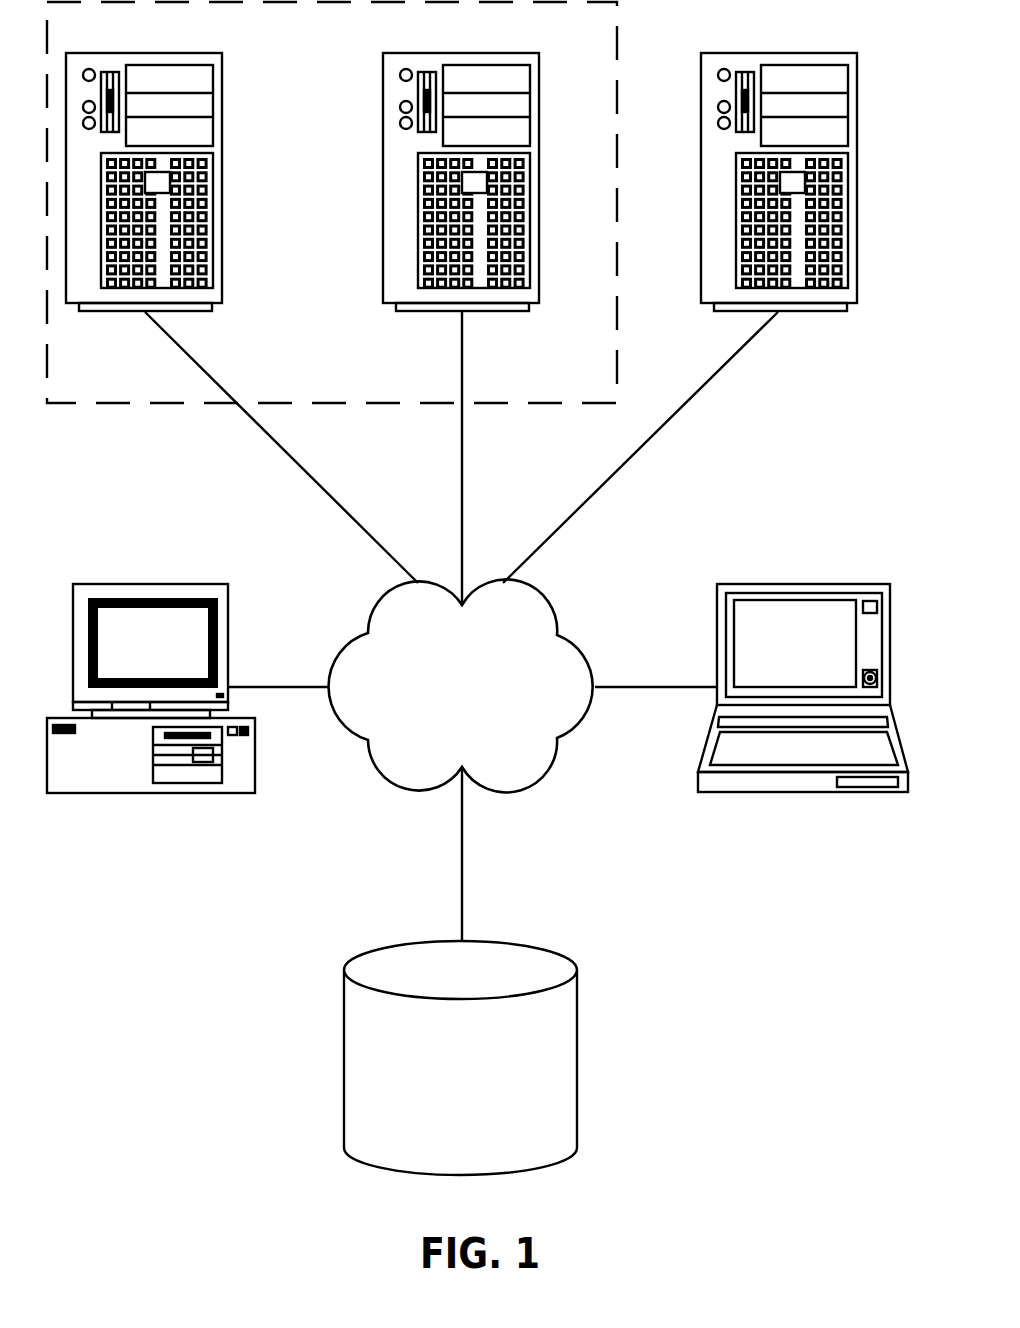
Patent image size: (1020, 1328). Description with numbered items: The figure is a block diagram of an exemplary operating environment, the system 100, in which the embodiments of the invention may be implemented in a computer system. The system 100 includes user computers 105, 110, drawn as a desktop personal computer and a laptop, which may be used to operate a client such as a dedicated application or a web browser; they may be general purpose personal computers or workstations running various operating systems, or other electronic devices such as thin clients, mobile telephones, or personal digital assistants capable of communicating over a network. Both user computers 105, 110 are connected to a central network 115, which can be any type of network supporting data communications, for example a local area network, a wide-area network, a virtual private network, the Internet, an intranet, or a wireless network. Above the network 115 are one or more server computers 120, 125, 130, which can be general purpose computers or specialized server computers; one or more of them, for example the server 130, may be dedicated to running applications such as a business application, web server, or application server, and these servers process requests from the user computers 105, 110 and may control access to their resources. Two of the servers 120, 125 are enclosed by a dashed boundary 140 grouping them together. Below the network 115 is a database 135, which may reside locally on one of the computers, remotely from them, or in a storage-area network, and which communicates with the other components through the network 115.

The system 100 is at (262, 937).
The user computer 105 is at (237, 793).
The user computer 110 is at (852, 792).
The network 115 is at (542, 767).
The server computer 120 is at (198, 312).
The server computer 125 is at (515, 312).
The server computer 130 is at (832, 312).
The database 135 is at (542, 1167).
The server group 140 is at (73, 403).